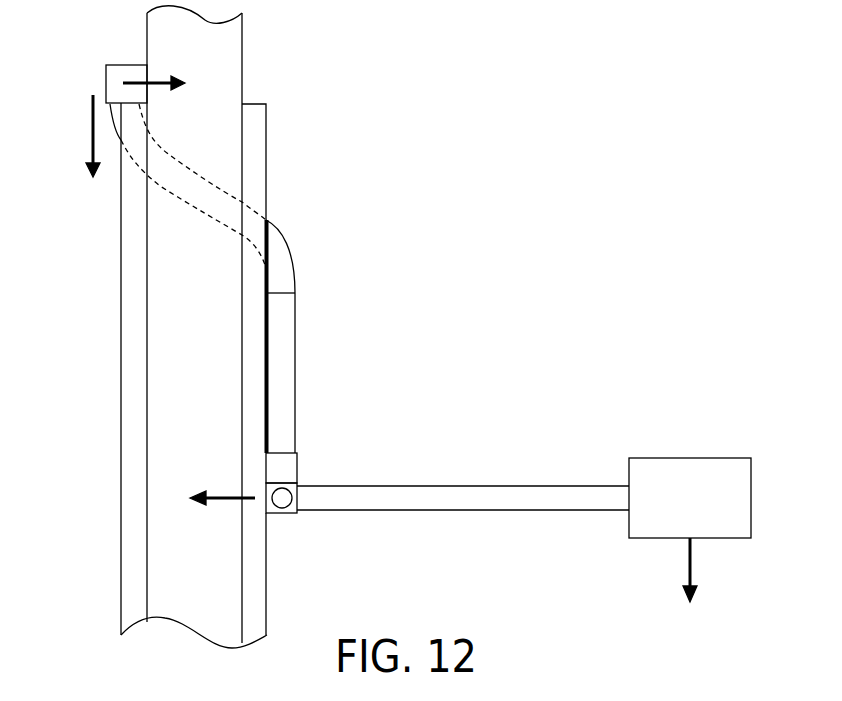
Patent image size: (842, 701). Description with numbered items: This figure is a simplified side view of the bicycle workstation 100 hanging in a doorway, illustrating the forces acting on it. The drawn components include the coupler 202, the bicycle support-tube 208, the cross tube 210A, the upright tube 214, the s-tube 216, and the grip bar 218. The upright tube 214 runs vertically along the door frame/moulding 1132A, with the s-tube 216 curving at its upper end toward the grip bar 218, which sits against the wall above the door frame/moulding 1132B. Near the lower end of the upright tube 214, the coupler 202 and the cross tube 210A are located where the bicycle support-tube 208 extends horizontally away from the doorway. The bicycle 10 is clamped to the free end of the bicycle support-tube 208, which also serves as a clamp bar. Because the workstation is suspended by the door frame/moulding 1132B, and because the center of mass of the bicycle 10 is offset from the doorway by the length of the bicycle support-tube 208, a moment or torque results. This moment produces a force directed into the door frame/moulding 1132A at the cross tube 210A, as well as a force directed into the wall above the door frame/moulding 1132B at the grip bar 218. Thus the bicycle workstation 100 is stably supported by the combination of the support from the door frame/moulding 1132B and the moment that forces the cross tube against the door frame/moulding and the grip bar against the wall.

The bicycle 10 is at (675, 525).
The bicycle workstation 100 is at (482, 270).
The coupler 202 is at (298, 469).
The bicycle support-tube 208 is at (482, 490).
The cross tube 210A is at (286, 498).
The upright tube 214 is at (285, 393).
The s-tube 216 is at (273, 248).
The grip bar 218 is at (105, 73).
The door frame/moulding 1132A is at (257, 132).
The door frame/moulding 1132B is at (128, 284).